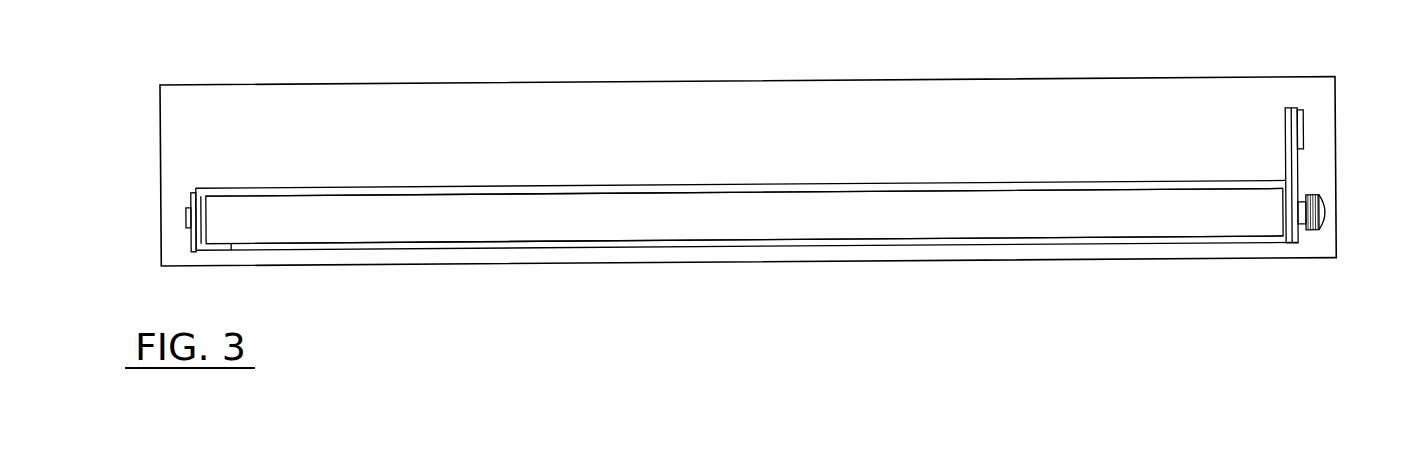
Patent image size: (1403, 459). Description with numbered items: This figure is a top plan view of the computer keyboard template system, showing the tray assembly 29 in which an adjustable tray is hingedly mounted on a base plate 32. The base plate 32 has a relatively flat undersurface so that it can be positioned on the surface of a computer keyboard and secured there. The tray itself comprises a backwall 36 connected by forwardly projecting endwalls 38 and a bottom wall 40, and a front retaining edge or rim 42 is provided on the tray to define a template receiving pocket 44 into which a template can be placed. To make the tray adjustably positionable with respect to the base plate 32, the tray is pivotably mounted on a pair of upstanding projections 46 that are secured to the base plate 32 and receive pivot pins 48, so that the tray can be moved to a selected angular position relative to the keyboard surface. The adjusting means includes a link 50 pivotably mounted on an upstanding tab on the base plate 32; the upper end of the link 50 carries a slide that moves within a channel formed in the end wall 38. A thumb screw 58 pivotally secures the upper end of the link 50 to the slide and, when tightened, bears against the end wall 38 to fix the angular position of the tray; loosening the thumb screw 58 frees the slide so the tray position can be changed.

The tray assembly 29 is at (1146, 115).
The base plate 32 is at (894, 101).
The backwall 36 is at (682, 187).
The endwalls 38 is at (1283, 195).
The bottom wall 40 is at (744, 215).
The front retaining edge or rim 42 is at (868, 242).
The template receiving pocket 44 is at (483, 214).
The upstanding projections 46 is at (1302, 193).
The pivot pins 48 is at (1303, 130).
The link 50 is at (1290, 167).
The thumb screw 58 is at (1327, 212).